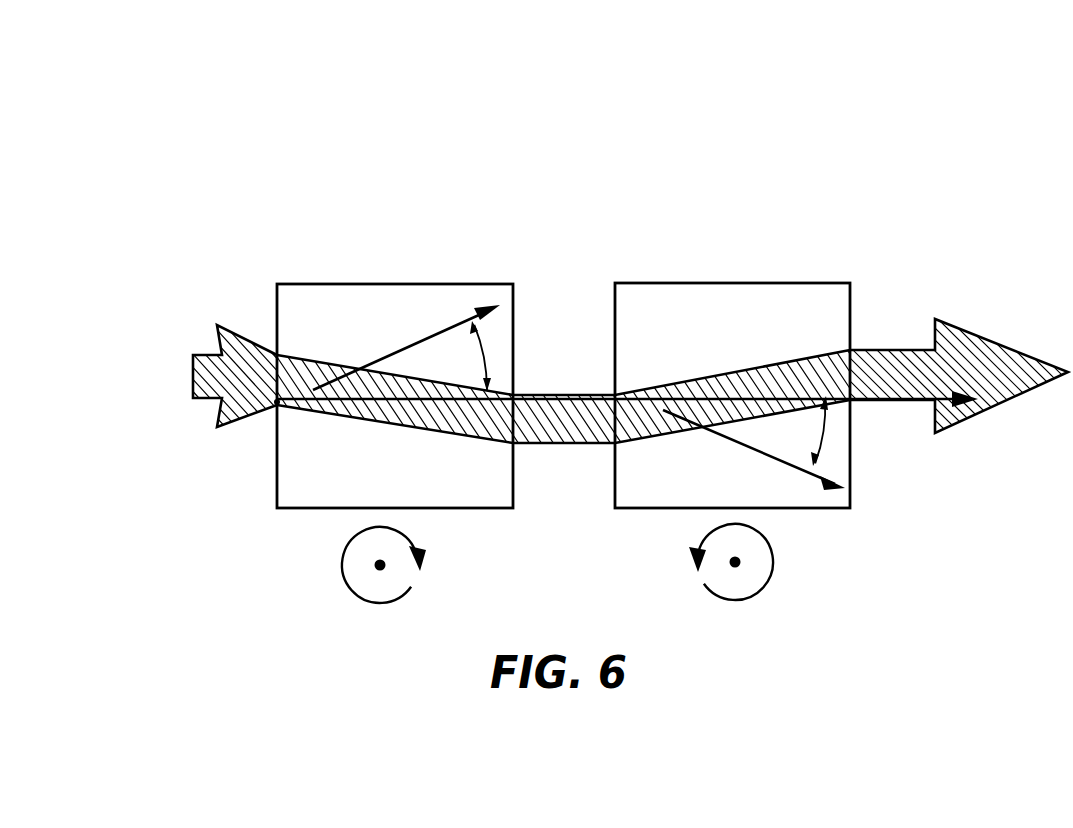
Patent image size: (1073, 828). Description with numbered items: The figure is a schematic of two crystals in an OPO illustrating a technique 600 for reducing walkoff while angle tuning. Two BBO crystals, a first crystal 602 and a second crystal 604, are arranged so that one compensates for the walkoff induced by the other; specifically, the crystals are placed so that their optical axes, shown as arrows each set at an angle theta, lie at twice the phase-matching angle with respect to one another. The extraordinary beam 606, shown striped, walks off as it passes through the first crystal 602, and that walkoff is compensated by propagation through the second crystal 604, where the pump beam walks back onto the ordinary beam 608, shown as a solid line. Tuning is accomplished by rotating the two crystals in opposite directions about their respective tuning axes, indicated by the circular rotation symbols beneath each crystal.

The technique of reducing walkoff 600 is at (675, 198).
The Crystal 1 602 is at (473, 283).
The Crystal 2 604 is at (810, 282).
The extraordinary beam 606 is at (242, 333).
The ordinary beam 608 is at (540, 394).